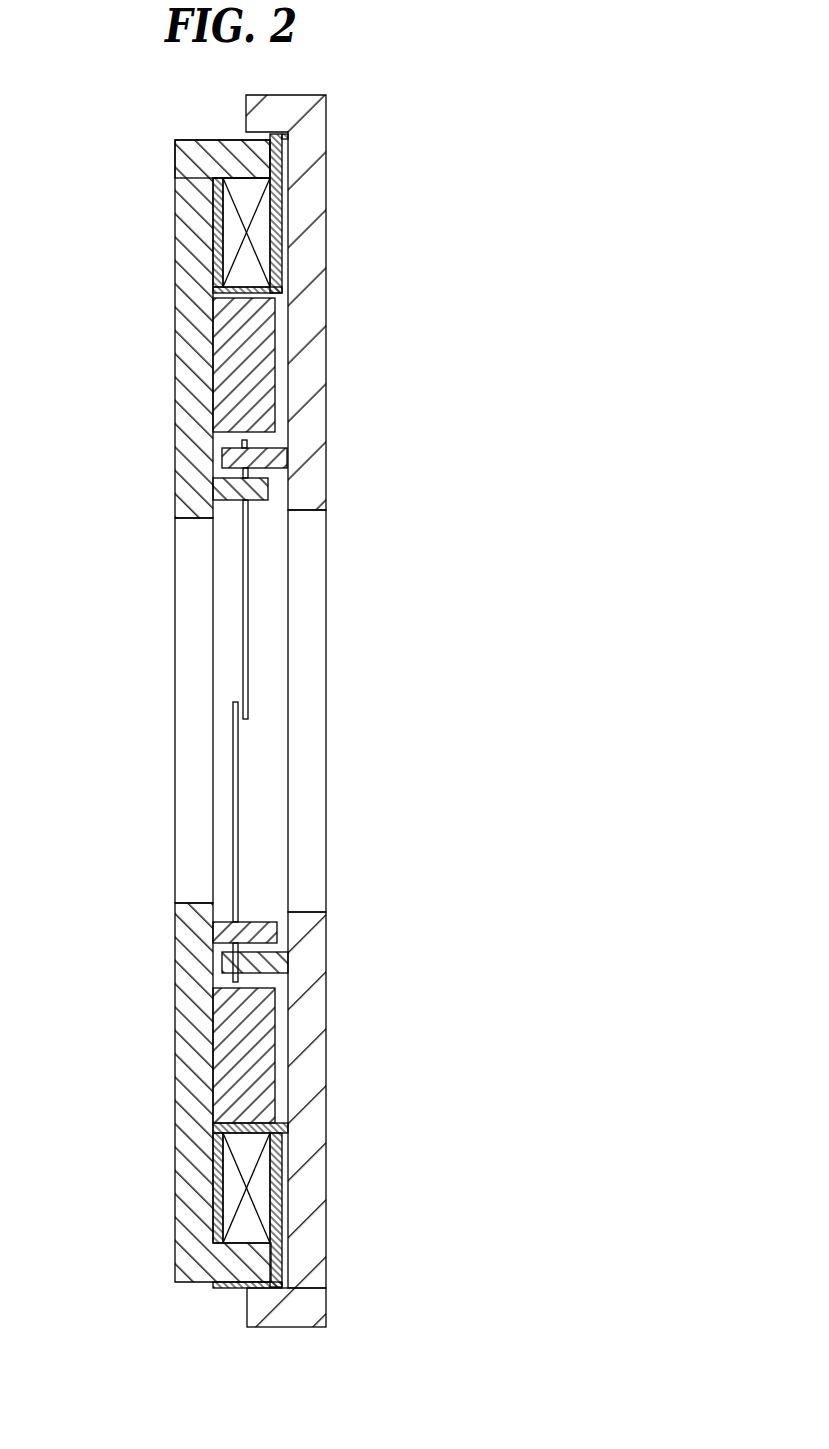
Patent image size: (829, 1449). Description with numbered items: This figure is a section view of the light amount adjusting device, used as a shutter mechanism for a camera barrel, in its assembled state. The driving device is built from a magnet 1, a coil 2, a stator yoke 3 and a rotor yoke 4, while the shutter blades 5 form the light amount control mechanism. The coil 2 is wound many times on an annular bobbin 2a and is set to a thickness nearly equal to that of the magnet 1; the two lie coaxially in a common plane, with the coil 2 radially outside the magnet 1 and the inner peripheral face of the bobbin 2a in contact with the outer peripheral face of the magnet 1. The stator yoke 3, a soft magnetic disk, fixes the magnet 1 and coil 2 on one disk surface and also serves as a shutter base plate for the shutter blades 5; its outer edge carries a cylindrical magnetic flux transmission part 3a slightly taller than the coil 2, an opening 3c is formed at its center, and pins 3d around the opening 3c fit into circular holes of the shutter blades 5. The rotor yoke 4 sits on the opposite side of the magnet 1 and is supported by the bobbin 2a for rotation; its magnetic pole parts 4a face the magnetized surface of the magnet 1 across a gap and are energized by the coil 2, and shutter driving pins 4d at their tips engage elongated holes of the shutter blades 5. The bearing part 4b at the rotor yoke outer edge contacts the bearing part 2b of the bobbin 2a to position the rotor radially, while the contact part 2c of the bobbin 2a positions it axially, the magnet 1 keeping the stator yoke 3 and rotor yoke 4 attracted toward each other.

The magnet 1 is at (270, 355).
The coil 2 is at (260, 240).
The bobbin 2a is at (205, 1180).
The bearing part 2b is at (260, 1284).
The contact part 2c is at (288, 1123).
The stator yoke 3 is at (185, 322).
The magnetic flux transmission part 3a is at (227, 157).
The opening 3c is at (187, 737).
The pins 3d is at (235, 491).
The rotor yoke 4 is at (313, 1030).
The magnetic pole parts 4a is at (312, 960).
The bearing part 4b is at (285, 1317).
The shutter driving pins 4d is at (275, 462).
The shutter blades 5 is at (248, 631).